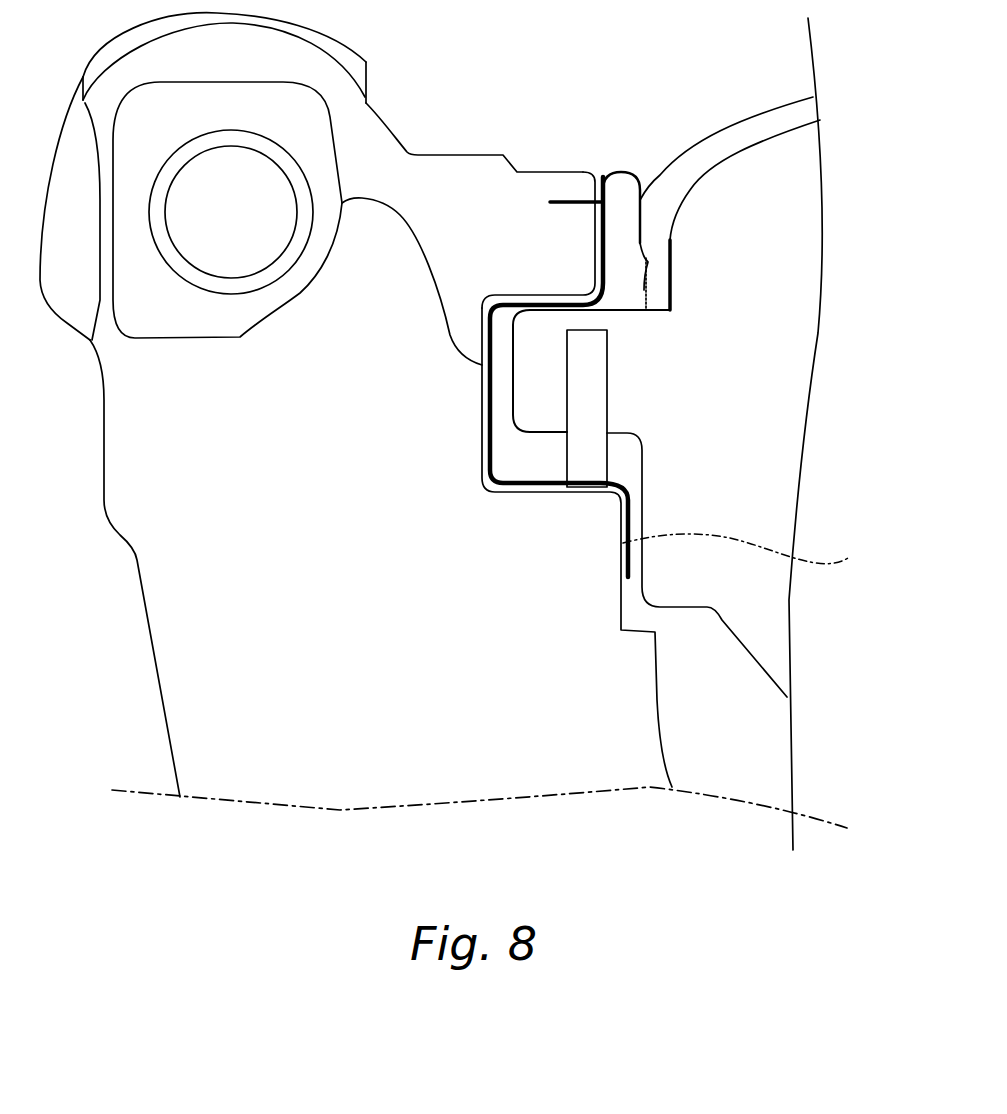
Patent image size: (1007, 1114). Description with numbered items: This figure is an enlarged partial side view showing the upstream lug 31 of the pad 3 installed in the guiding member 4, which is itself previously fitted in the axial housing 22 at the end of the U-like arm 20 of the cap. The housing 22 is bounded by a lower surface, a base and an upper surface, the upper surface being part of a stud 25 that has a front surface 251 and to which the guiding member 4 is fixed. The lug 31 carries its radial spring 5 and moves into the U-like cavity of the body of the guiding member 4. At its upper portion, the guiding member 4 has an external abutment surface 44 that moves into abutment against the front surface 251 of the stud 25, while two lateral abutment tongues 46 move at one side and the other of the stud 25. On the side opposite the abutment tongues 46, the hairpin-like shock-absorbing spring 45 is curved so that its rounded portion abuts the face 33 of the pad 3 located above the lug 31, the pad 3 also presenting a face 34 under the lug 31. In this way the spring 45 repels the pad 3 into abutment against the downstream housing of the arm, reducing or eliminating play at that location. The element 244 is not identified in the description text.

The U-like arm 20 is at (247, 668).
The stud 25 is at (531, 247).
The front surface of stud 251 is at (588, 230).
The lower wall portion 244 is at (615, 550).
The housing 22 is at (523, 457).
The radial spring 5 is at (584, 470).
The lug 31 is at (615, 380).
The guiding member 4 is at (633, 168).
The lateral abutment tongues 46 is at (567, 200).
The hairpin-like shock-absorbing spring 45 is at (645, 182).
The pad 3 is at (768, 176).
The face of pad above lug 33 is at (652, 262).
The external abutment surface 44 is at (605, 268).
The face of pad under lug 34 is at (848, 558).